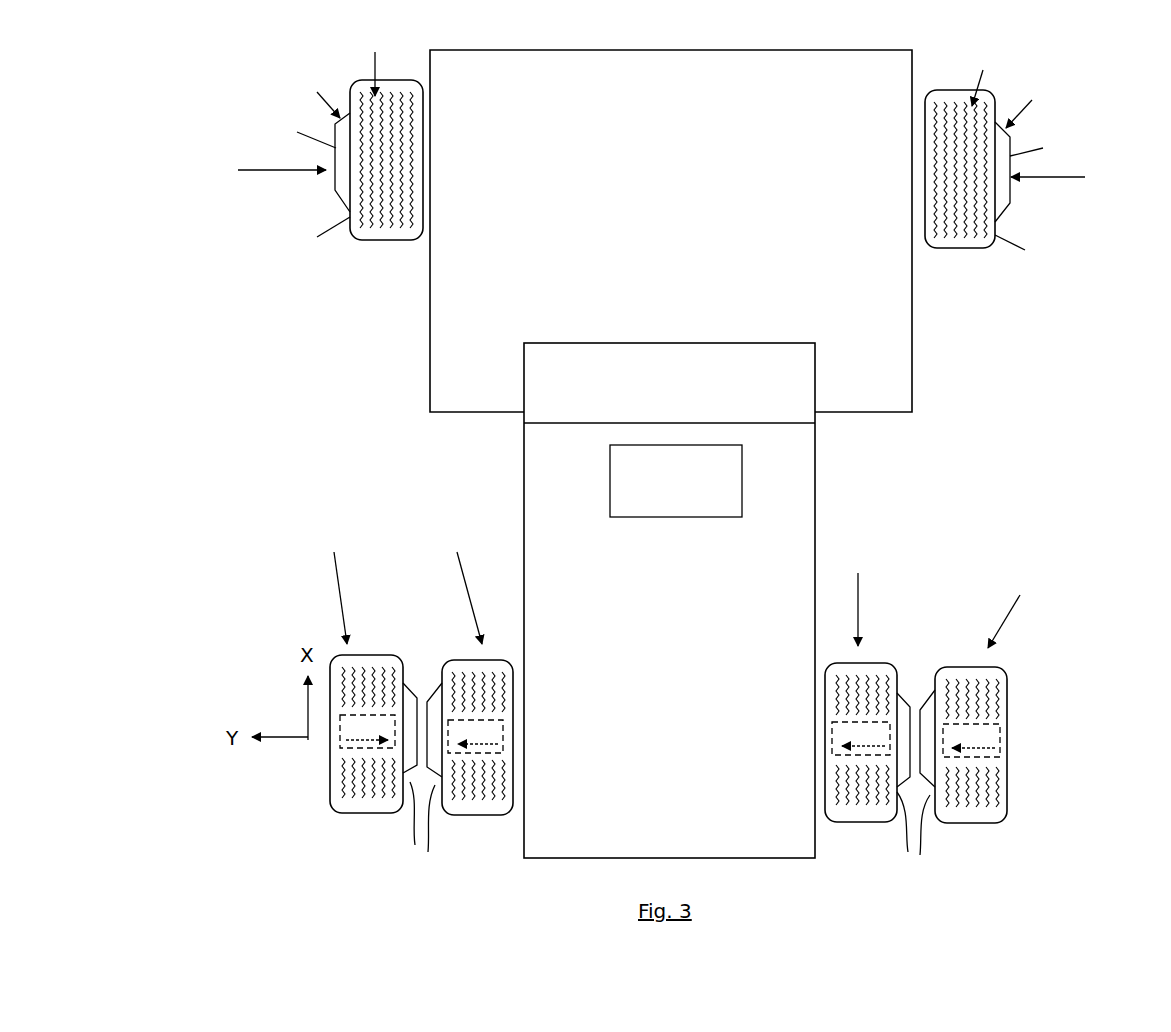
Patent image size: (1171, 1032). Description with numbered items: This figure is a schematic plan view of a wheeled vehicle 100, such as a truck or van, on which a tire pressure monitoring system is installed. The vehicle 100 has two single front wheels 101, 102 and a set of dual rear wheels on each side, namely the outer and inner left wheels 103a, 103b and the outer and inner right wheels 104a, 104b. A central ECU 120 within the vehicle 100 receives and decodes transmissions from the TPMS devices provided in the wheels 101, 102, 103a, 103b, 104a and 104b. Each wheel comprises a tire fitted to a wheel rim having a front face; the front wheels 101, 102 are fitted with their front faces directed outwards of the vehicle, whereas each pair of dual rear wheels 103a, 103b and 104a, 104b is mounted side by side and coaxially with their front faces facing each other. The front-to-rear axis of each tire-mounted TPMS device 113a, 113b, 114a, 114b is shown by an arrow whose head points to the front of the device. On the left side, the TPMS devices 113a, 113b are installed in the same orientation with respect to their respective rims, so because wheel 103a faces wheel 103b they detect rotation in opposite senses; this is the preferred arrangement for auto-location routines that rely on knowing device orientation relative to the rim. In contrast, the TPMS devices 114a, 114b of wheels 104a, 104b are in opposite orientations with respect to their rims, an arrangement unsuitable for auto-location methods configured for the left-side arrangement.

The wheeled vehicle 100 is at (671, 457).
The front wheel 101 is at (289, 152).
The front wheel 102 is at (1048, 160).
The rear wheel 103a is at (332, 668).
The rear wheel 103b is at (450, 672).
The rear wheel 104a is at (1012, 699).
The rear wheel 104b is at (883, 676).
The TPMS device 113a is at (358, 752).
The TPMS device 113b is at (457, 714).
The TPMS device 114a is at (990, 756).
The TPMS device 114b is at (873, 718).
The central ECU 120 is at (676, 481).